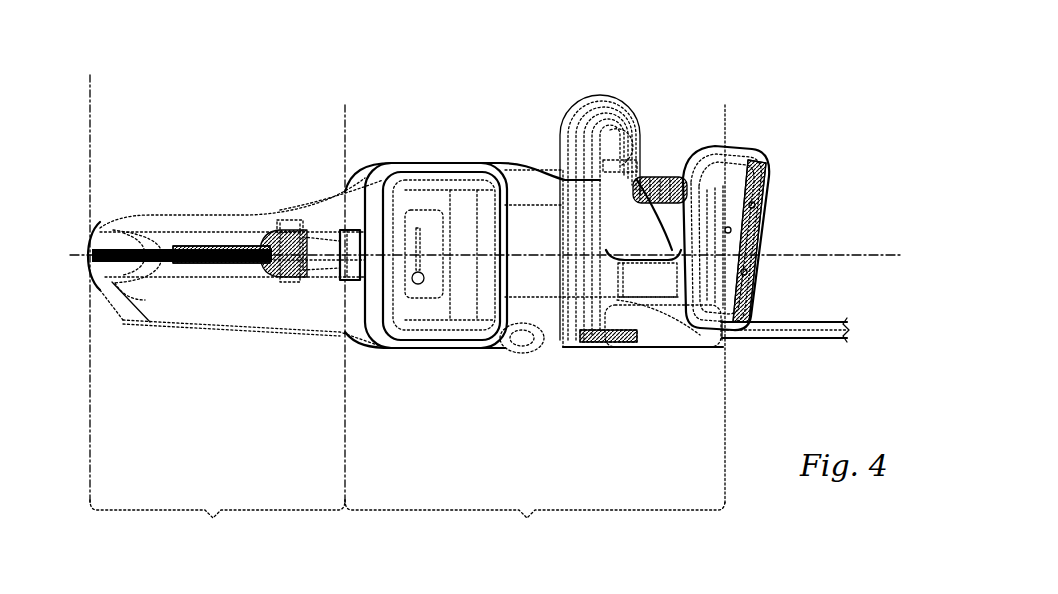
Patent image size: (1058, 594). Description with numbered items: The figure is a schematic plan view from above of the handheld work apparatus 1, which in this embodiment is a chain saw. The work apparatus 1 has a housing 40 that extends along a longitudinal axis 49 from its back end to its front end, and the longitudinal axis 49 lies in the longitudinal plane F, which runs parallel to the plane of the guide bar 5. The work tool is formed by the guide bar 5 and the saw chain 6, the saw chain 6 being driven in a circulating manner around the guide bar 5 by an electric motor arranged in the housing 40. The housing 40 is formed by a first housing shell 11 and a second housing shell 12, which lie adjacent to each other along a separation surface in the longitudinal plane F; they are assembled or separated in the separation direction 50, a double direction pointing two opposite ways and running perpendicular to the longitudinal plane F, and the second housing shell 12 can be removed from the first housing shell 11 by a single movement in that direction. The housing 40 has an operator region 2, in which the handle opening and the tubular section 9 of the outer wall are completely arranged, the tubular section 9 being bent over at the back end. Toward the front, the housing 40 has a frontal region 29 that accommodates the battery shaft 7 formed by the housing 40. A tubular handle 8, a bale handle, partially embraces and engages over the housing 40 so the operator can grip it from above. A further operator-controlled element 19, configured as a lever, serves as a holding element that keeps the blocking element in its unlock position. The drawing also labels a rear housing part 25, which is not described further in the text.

The handheld work apparatus 1 is at (222, 96).
The operator region 2 is at (217, 523).
The guide bar 5 is at (780, 335).
The saw chain 6 is at (818, 335).
The battery shaft 7 is at (380, 185).
The tubular handle 8 is at (587, 140).
The tubular section 9 is at (150, 270).
The first housing shell 11 is at (108, 270).
The second housing shell 12 is at (107, 230).
The further operator-controlled element 19 is at (198, 247).
The rear housing 25 is at (744, 140).
The frontal region 29 is at (535, 523).
The housing 40 is at (365, 352).
The longitudinal axis 49 is at (807, 255).
The separation direction 50 is at (62, 236).